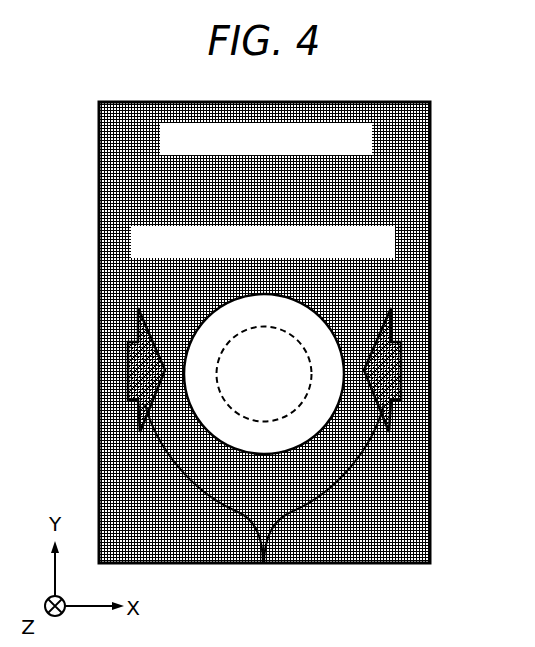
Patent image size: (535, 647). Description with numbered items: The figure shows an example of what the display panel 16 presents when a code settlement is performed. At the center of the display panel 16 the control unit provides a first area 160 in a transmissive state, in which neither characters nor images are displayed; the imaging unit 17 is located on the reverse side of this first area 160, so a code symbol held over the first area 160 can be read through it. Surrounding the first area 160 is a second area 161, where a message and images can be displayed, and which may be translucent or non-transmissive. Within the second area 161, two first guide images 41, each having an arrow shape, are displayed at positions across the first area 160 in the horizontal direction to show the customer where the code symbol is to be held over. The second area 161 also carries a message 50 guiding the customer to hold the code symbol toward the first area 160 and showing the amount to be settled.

The display panel 16 is at (424, 132).
The message 50 is at (336, 189).
The first area 160 is at (283, 291).
The imaging unit 17 is at (283, 325).
The second area 161 is at (397, 515).
The first guide image 41 is at (255, 556).